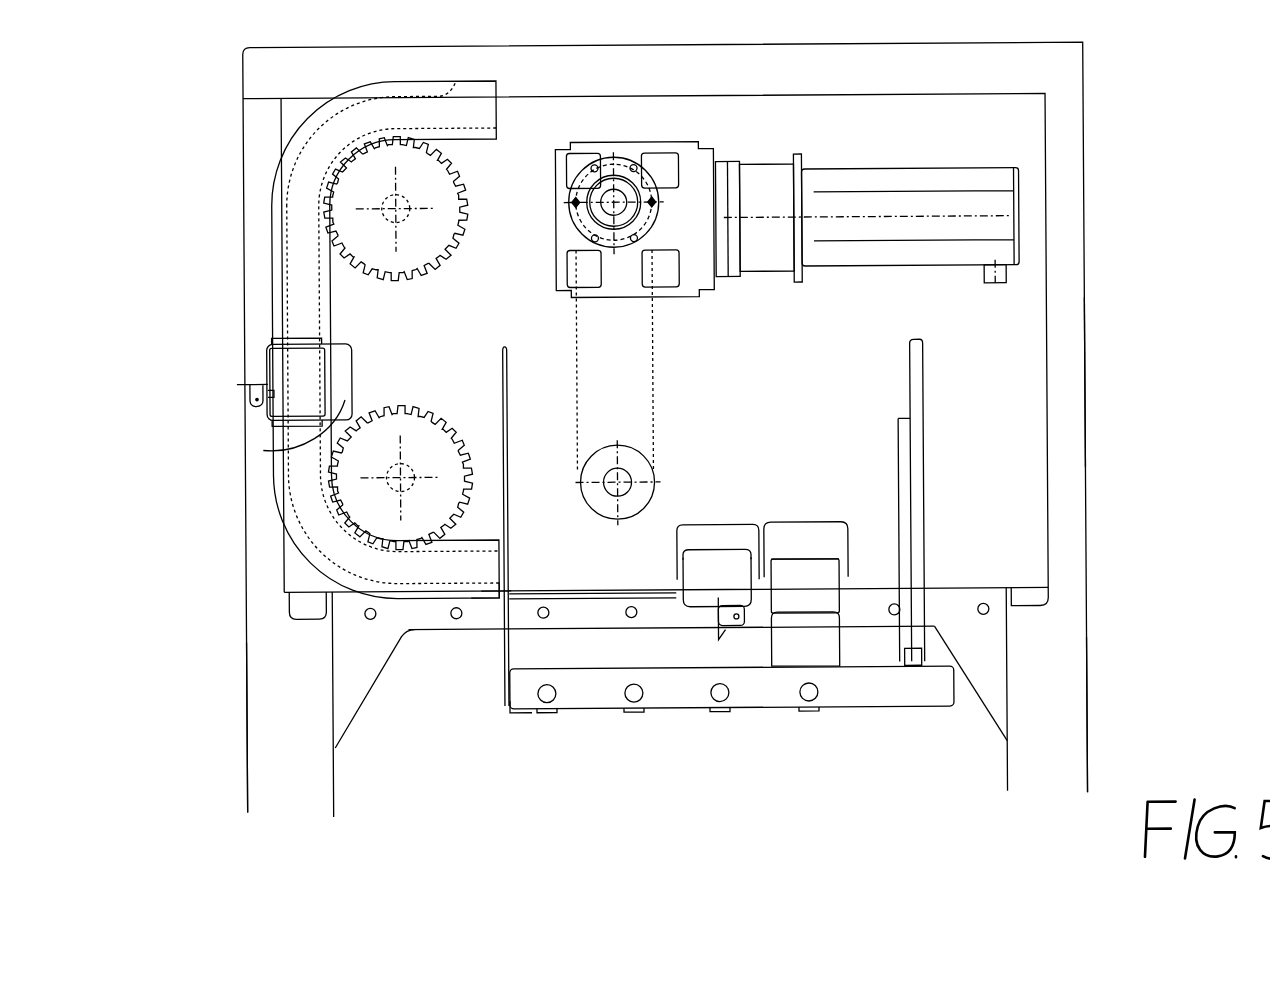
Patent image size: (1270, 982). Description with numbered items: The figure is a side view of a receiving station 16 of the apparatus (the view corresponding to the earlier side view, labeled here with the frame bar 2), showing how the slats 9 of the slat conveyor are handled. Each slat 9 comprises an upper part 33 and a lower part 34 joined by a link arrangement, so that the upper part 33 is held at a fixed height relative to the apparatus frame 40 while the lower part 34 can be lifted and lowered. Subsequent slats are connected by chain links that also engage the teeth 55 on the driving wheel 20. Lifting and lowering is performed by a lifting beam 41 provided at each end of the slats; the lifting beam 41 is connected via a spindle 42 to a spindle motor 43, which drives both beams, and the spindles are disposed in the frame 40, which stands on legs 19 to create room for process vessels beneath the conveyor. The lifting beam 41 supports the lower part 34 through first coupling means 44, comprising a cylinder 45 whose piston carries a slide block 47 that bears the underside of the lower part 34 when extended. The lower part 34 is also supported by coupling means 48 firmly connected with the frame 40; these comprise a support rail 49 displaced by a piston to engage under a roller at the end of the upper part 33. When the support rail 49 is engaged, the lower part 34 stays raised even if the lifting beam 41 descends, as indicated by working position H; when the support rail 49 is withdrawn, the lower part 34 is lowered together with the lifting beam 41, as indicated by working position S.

The frame bar 2 is at (943, 588).
The slat 9 is at (268, 360).
The receiving station 16 is at (1108, 120).
The legs 19 is at (266, 682).
The driving wheel 20 is at (328, 180).
The upper part 33 is at (347, 453).
The lower part 34 is at (268, 440).
The apparatus frame 40 is at (1087, 385).
The lifting beam 41 is at (915, 697).
The spindle 42 is at (917, 637).
The spindle motor 43 is at (639, 186).
The first coupling means 44 is at (535, 730).
The cylinder 45 is at (552, 700).
The slide block 47 is at (636, 692).
The coupling means 48 is at (476, 571).
The support rail 49 is at (502, 592).
The teeth 55 is at (330, 213).
The working position H is at (718, 785).
The working position S is at (805, 752).